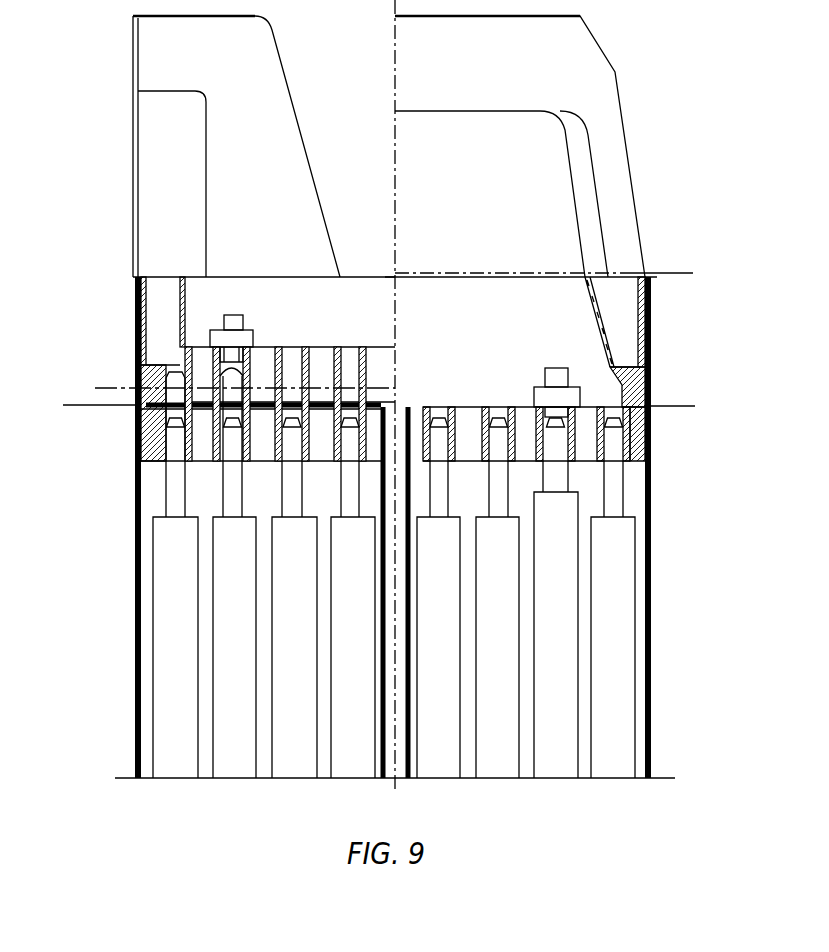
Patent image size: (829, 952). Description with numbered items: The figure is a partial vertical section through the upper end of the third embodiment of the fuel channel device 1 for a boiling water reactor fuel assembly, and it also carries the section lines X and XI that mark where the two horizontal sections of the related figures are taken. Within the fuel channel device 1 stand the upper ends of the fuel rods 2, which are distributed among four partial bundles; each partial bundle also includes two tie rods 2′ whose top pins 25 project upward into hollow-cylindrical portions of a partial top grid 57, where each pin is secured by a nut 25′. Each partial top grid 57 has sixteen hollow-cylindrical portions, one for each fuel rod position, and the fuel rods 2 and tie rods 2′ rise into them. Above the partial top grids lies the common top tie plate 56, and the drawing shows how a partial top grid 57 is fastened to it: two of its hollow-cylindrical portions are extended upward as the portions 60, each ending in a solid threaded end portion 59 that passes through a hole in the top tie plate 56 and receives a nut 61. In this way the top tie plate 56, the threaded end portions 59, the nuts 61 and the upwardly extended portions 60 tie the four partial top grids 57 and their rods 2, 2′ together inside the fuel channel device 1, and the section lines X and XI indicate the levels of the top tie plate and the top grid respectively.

The fuel channel device 1 is at (137, 640).
The fuel rod 2 is at (620, 642).
The tie rod 2′ is at (562, 568).
The top pin 25 is at (562, 475).
The nut 25′ is at (550, 395).
The common top tie plate 56 is at (320, 358).
The partial top grid 57 is at (215, 461).
The solid threaded end portion 59 is at (235, 321).
The upwardly extended hollow-cylindrical portion 60 is at (145, 451).
The nut 61 is at (250, 338).
The section line X— X is at (104, 388).
The section line XI— XI is at (70, 367).